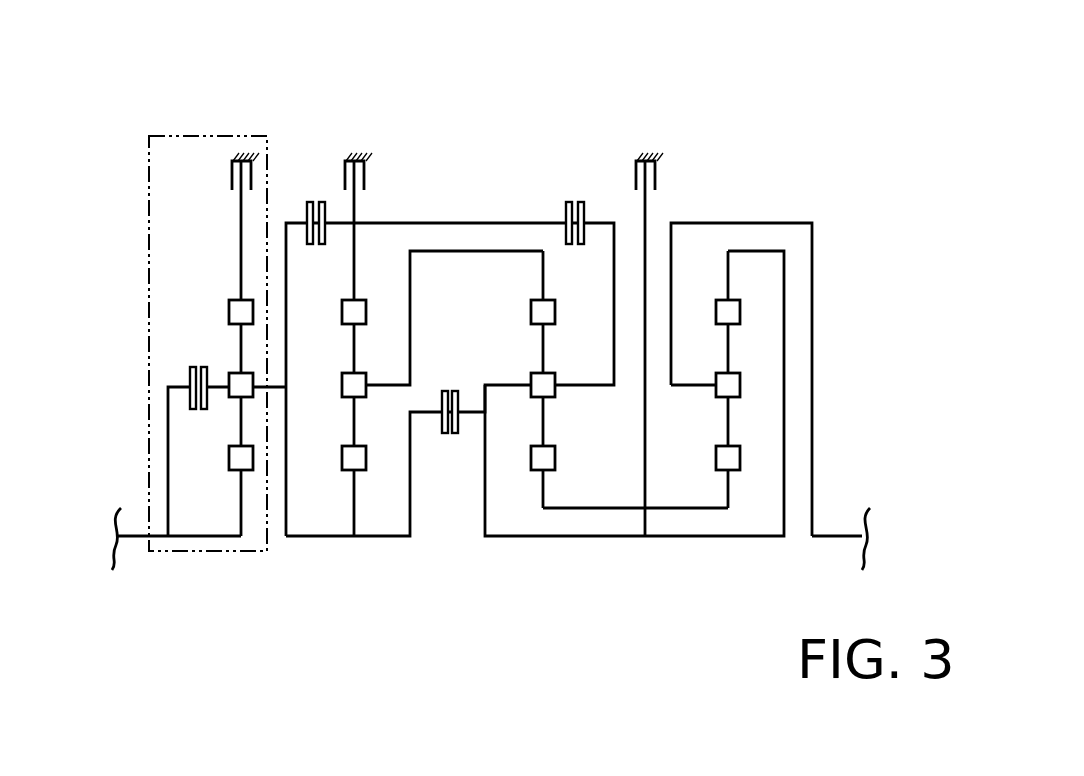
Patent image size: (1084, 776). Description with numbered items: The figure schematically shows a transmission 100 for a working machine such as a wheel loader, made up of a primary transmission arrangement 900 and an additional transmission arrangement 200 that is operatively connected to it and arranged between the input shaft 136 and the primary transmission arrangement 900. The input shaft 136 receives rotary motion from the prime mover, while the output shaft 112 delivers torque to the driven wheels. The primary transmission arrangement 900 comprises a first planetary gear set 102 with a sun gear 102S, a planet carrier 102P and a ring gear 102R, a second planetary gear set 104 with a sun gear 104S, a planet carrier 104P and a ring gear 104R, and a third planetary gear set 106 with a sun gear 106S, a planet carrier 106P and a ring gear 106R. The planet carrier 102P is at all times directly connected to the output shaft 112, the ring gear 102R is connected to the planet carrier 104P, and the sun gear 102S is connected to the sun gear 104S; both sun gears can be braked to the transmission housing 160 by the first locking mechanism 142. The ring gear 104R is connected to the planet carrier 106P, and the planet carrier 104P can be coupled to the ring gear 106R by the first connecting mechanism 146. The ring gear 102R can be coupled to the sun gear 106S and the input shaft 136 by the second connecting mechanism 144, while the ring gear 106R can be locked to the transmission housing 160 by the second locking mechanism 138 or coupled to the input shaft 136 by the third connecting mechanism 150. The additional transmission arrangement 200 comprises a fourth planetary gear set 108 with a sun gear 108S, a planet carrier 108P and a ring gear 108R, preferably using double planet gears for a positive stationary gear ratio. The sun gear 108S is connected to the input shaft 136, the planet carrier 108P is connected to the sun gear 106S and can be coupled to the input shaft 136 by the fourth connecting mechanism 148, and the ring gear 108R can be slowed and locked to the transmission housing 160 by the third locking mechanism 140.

The primary transmission arrangement 900 is at (766, 86).
The transmission 100 is at (853, 191).
The additional transmission arrangement 200 is at (149, 229).
The first planetary gear set 102 is at (822, 374).
The ring gear of the first planetary gear set 102R is at (741, 310).
The planet carrier of the first planetary gear set 102P is at (741, 386).
The sun gear of the first planetary gear set 102S is at (741, 459).
The second planetary gear set 104 is at (610, 372).
The ring gear of the second planetary gear set 104R is at (531, 304).
The planet carrier of the second planetary gear set 104P is at (531, 390).
The sun gear of the second planetary gear set 104S is at (556, 458).
The third planetary gear set 106 is at (372, 388).
The ring gear of the third planetary gear set 106R is at (366, 306).
The planet carrier of the third planetary gear set 106P is at (342, 386).
The sun gear of the third planetary gear set 106S is at (367, 458).
The fourth planetary gear set 108 is at (151, 364).
The ring gear of the fourth planetary gear set 108R is at (229, 314).
The planet carrier of the fourth planetary gear set 108P is at (229, 397).
The sun gear of the fourth planetary gear set 108S is at (229, 463).
The output shaft 112 is at (837, 538).
The input shaft 136 is at (137, 538).
The second locking mechanism 138 is at (364, 172).
The third locking mechanism 140 is at (232, 172).
The first locking mechanism 142 is at (652, 174).
The second connecting mechanism 144 is at (457, 469).
The first connecting mechanism 146 is at (577, 174).
The fourth connecting mechanism 148 is at (161, 367).
The third connecting mechanism 150 is at (318, 174).
The transmission housing 160 is at (232, 158).